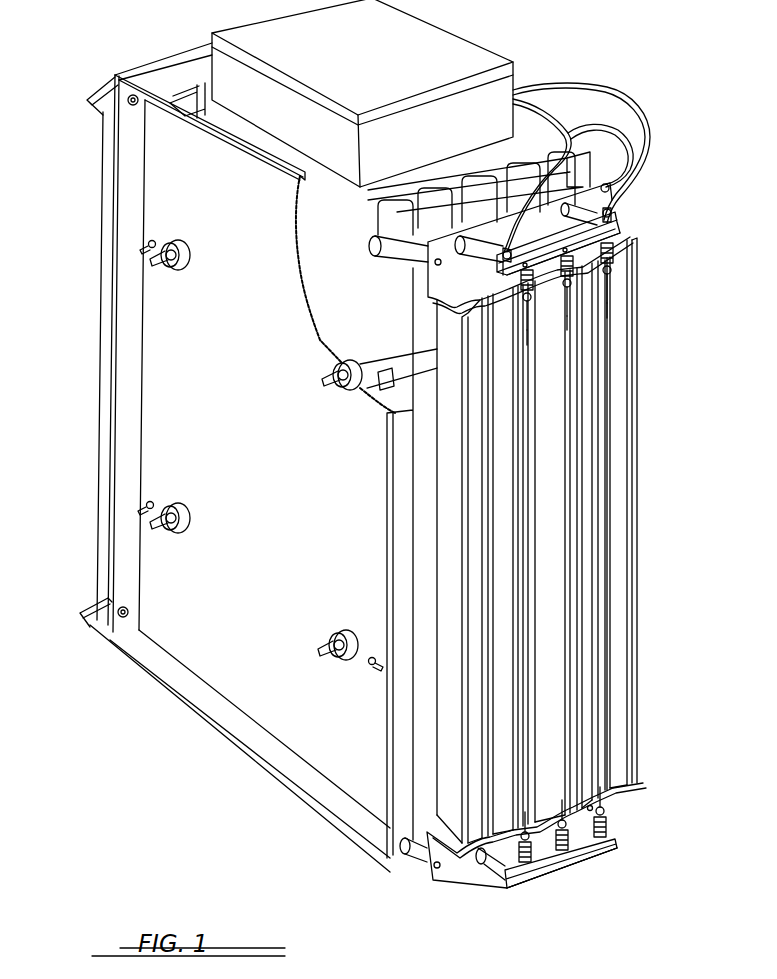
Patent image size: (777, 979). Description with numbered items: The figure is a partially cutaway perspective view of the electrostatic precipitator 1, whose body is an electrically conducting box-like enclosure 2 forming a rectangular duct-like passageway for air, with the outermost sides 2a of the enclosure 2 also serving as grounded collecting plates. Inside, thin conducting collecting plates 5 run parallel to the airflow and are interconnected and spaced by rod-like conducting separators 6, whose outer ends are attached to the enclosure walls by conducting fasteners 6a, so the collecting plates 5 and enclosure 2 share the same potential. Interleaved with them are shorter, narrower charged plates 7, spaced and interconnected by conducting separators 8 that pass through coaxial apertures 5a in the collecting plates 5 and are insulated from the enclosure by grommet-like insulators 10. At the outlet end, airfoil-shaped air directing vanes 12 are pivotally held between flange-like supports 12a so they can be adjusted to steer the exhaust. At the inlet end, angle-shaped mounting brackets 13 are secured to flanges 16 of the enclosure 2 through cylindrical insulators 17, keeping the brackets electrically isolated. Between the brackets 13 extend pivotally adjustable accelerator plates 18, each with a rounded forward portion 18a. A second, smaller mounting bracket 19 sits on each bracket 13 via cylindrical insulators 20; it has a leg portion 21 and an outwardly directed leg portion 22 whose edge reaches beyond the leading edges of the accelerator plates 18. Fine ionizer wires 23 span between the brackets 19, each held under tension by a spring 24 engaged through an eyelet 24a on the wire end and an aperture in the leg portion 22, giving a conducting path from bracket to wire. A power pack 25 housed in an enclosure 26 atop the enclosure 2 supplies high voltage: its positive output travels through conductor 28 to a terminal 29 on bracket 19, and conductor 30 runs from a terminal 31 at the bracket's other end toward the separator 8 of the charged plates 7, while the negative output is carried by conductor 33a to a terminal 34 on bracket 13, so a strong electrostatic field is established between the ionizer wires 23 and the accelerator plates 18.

The electrostatic precipitator 1 is at (133, 40).
The box-like enclosure 2 is at (155, 155).
The outermost sides of enclosure 2a is at (270, 576).
The collecting plate 5 is at (413, 207).
The coaxial aperture 5a is at (415, 345).
The conducting separator 6 is at (385, 368).
The electrically conducting fastener 6a is at (156, 243).
The charged plate 7 is at (328, 217).
The conducting separator 8 is at (156, 268).
The grommet-like insulator 10 is at (191, 262).
The air directing vane 12 is at (105, 322).
The flange-like support 12a is at (100, 98).
The mounting bracket 13 is at (430, 285).
The flange 16 is at (398, 443).
The cylindrical insulator 17 is at (400, 255).
The accelerator plate 18 is at (442, 492).
The rounded forward portion 18a is at (638, 395).
The second mounting bracket 19 is at (552, 254).
The cylindrical insulator 20 is at (470, 256).
The leg portion 21 is at (505, 268).
The leg portion 22 is at (622, 233).
The ionizer wire 23 is at (605, 683).
The tension spring 24 is at (627, 258).
The electrically conducting eyelet 24a is at (613, 278).
The power pack 25 is at (372, 66).
The box-like enclosure 26 is at (423, 20).
The electrical conductor 28 is at (545, 113).
The terminal 29 is at (492, 244).
The electrical conductor 30 is at (642, 170).
The terminal 31 is at (614, 213).
The electrical conductor 33a is at (620, 90).
The terminal 34 is at (606, 181).